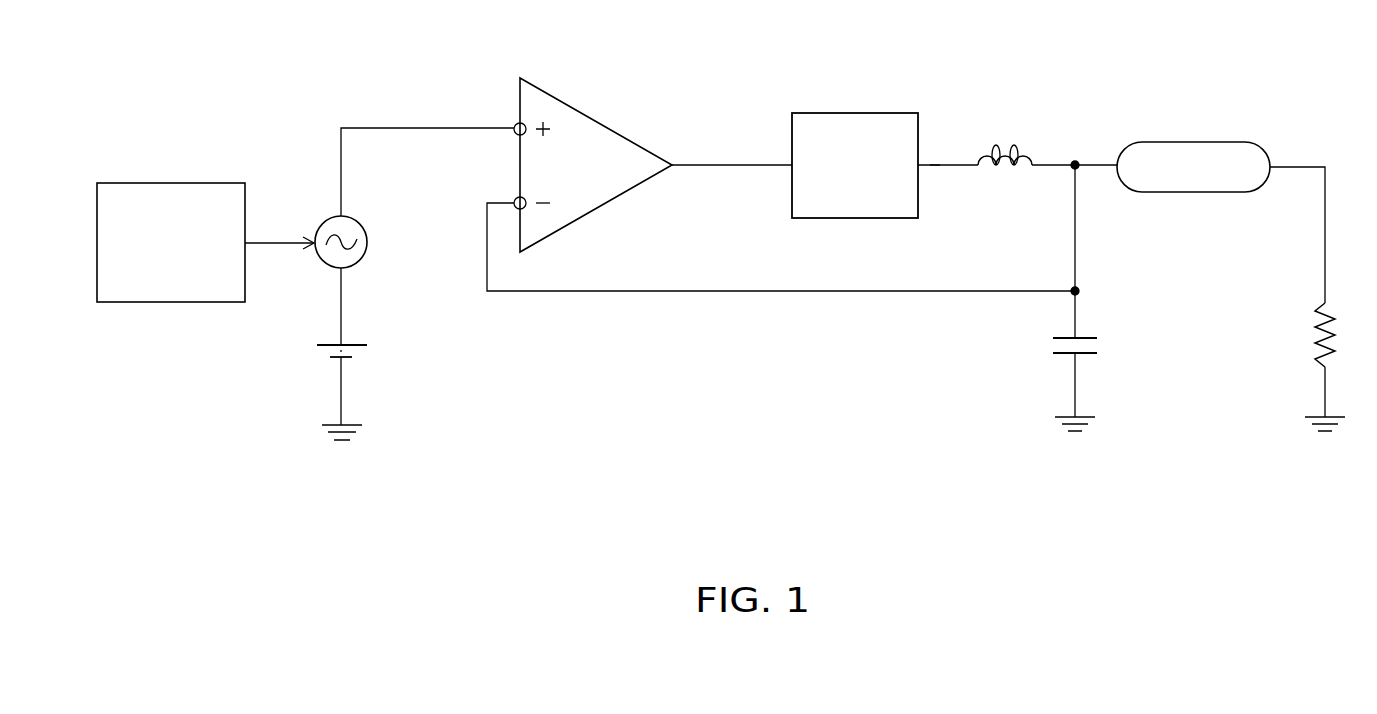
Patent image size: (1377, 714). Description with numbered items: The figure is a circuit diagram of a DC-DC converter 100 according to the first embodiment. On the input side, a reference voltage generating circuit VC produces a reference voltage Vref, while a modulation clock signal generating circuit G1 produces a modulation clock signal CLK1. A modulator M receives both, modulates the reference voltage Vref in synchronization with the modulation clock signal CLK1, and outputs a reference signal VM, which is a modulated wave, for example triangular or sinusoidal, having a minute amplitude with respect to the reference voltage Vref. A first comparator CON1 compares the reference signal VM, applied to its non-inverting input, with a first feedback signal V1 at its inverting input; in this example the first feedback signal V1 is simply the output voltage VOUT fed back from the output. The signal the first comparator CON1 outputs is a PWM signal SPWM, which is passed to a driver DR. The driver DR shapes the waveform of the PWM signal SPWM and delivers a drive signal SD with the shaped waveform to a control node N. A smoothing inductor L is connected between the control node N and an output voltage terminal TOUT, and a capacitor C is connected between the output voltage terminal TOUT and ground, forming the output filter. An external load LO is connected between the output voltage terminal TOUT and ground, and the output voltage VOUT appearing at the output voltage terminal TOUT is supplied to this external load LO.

The DC-DC converter 100 is at (784, 508).
The modulation clock signal generating circuit G1 is at (170, 183).
The modulation clock signal CLK1 is at (279, 231).
The modulator M is at (367, 242).
The reference voltage generating circuit VC is at (357, 344).
The reference voltage Vref is at (294, 357).
The reference signal VM is at (501, 118).
The first feedback signal V1 is at (776, 233).
The first comparator CON1 is at (595, 118).
The PWM signal SPWM is at (732, 151).
The driver DR is at (855, 113).
The control node N is at (950, 165).
The drive signal SD is at (944, 182).
The smoothing inductor L is at (1005, 152).
The capacitor C is at (1083, 338).
The output voltage terminal TOUT is at (1193, 142).
The output voltage VOUT is at (1303, 222).
The external load LO is at (1328, 308).